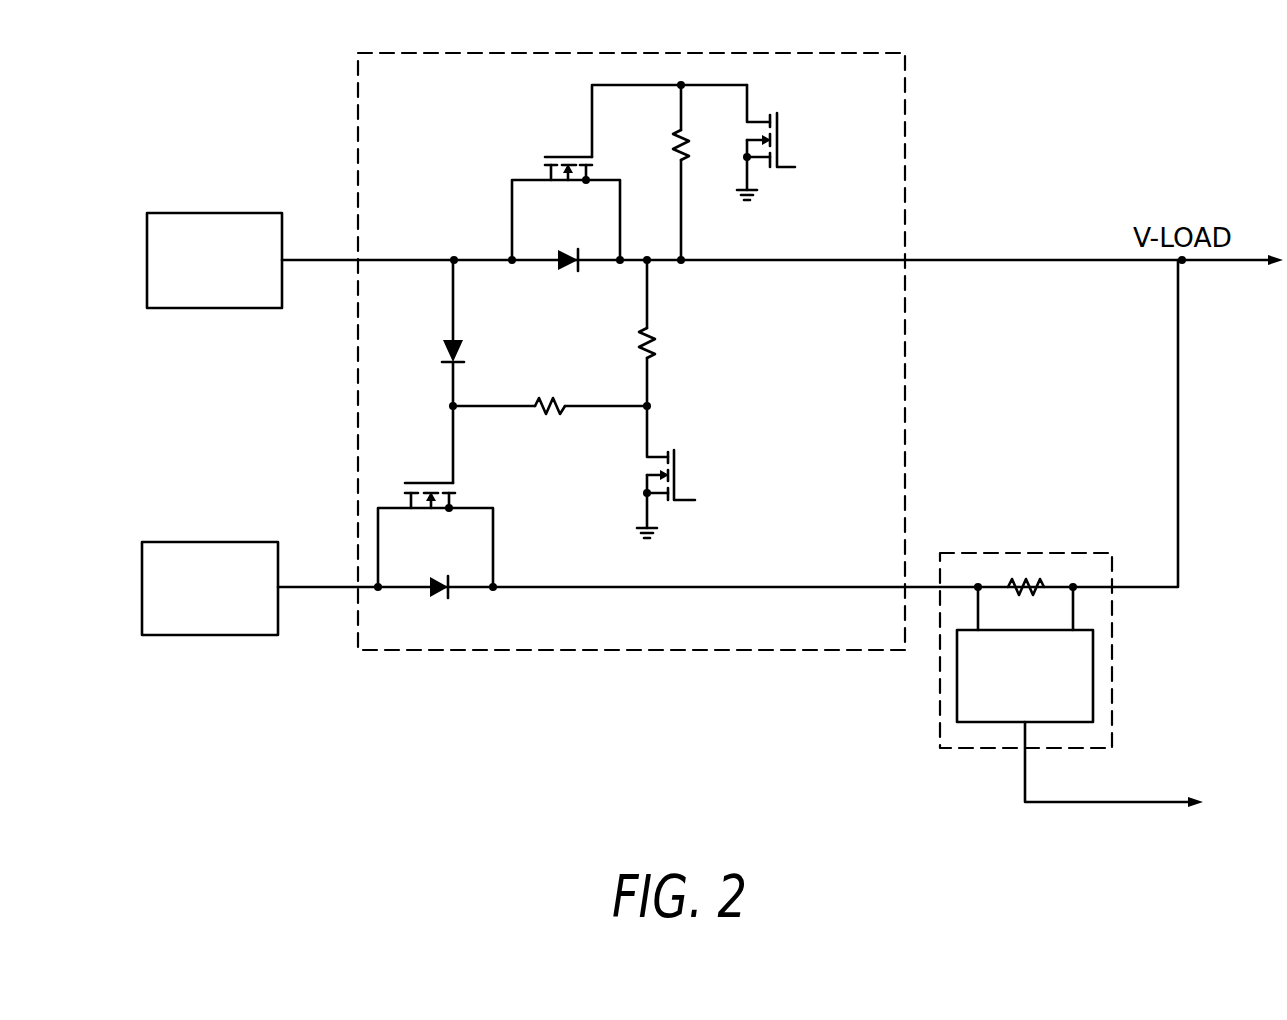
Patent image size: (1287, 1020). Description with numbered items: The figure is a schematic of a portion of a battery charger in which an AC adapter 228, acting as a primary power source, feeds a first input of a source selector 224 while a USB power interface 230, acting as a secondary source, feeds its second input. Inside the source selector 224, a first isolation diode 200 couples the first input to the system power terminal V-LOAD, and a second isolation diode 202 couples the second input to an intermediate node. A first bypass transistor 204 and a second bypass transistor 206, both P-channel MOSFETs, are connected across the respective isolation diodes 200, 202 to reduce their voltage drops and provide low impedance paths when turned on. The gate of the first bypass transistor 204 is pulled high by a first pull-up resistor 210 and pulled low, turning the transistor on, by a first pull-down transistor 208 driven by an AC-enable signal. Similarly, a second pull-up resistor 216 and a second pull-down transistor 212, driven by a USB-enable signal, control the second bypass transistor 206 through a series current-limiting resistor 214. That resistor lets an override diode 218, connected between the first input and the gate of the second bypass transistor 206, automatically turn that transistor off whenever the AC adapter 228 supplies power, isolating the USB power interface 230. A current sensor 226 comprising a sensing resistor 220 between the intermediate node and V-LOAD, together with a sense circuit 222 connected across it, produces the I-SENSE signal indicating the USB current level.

The first isolation diode 200 is at (578, 272).
The second isolation diode 202 is at (441, 600).
The first bypass transistor 204 is at (553, 147).
The second bypass transistor 206 is at (420, 478).
The first pull-down transistor 208 is at (787, 128).
The first pull-up resistor 210 is at (692, 148).
The second pull-down transistor 212 is at (683, 463).
The current-limiting resistor 214 is at (548, 424).
The second pull-up resistor 216 is at (666, 344).
The override diode 218 is at (468, 350).
The sensing resistor 220 is at (1034, 568).
The sense circuit 222 is at (1093, 655).
The source selector 224 is at (630, 652).
The current sensor 226 is at (976, 752).
The AC adapter 228 is at (172, 213).
The USB power interface 230 is at (170, 542).